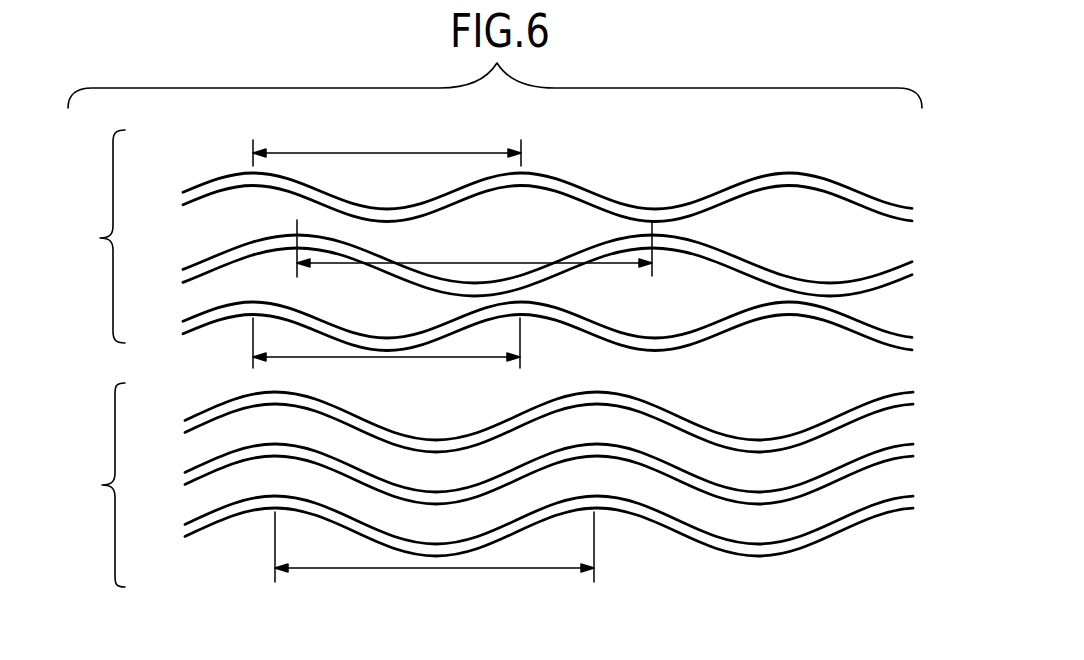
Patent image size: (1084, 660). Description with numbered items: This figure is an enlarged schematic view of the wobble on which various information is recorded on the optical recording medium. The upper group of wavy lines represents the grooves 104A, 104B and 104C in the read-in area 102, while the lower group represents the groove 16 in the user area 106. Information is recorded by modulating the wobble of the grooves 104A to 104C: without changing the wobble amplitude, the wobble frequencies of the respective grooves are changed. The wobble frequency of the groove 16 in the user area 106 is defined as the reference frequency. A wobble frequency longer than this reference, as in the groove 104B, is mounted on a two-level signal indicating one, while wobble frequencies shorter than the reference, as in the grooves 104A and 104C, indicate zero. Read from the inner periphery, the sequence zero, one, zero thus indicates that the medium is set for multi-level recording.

The read-in area 102 is at (483, 255).
The groove 104A is at (206, 181).
The groove 104B is at (207, 258).
The groove 104C is at (205, 312).
The user area 106 is at (485, 494).
The groove 16 is at (201, 413).